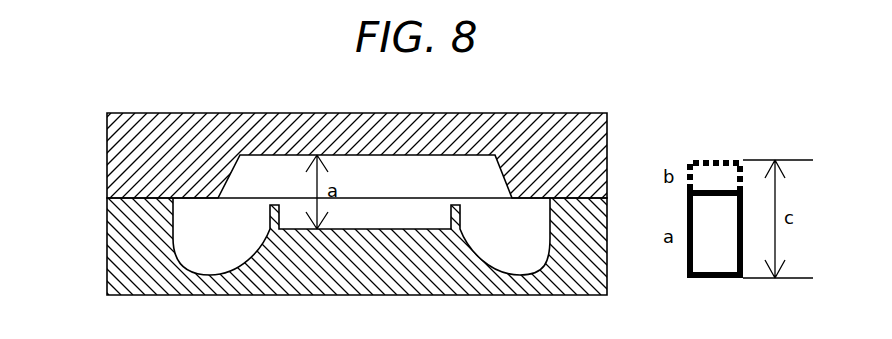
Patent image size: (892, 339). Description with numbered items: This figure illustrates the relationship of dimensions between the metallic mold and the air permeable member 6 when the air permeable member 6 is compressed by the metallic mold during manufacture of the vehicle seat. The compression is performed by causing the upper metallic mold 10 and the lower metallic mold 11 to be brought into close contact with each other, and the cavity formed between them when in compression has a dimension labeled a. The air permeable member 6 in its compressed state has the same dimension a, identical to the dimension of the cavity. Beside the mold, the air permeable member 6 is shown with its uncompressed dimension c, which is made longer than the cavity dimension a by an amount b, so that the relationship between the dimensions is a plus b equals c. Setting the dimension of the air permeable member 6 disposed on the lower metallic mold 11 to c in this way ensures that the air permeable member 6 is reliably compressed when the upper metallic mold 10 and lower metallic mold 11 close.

The upper metallic mold 10 is at (125, 157).
The lower metallic mold 11 is at (125, 245).
The air permeable member 6 is at (712, 243).